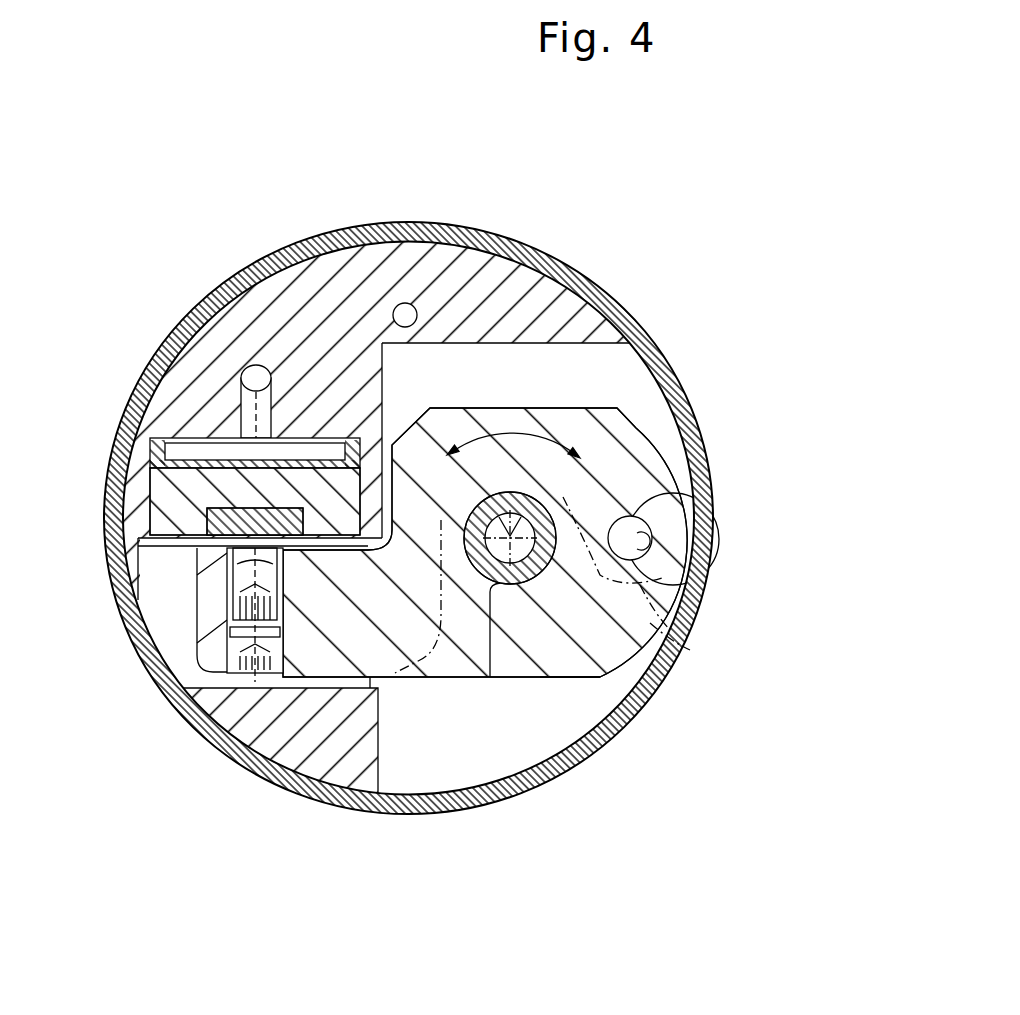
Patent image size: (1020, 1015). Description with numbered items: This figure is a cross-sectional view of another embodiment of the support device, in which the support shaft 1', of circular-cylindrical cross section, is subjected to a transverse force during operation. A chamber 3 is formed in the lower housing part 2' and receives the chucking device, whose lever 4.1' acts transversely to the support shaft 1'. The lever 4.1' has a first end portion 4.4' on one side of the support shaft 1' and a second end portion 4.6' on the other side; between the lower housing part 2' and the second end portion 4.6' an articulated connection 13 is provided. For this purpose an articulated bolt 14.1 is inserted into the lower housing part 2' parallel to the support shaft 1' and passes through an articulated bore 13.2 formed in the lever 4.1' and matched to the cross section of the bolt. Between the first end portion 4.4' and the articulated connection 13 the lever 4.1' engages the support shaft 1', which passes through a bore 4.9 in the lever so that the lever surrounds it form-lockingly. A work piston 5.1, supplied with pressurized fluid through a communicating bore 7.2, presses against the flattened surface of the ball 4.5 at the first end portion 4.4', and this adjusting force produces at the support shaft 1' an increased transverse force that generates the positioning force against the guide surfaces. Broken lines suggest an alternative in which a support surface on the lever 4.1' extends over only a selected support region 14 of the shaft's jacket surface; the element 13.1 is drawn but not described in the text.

The support shaft 1' is at (408, 518).
The lower housing part 2' is at (408, 491).
The chamber 3 is at (637, 668).
The lever 4.1' is at (594, 765).
The first end portion of the lever 4.4' is at (211, 622).
The ball 4.5 is at (230, 568).
The second end portion of the lever 4.6' is at (712, 647).
The bore 4.9 is at (490, 677).
The work piston 5.1 is at (162, 488).
The communicating bore 7.2 is at (247, 403).
The articulated connection 13 is at (758, 545).
The cam lobe 13.1 is at (693, 493).
The articulated bore 13.2 is at (660, 577).
The support region 14 is at (512, 434).
The articulated bolt 14.1 is at (700, 608).